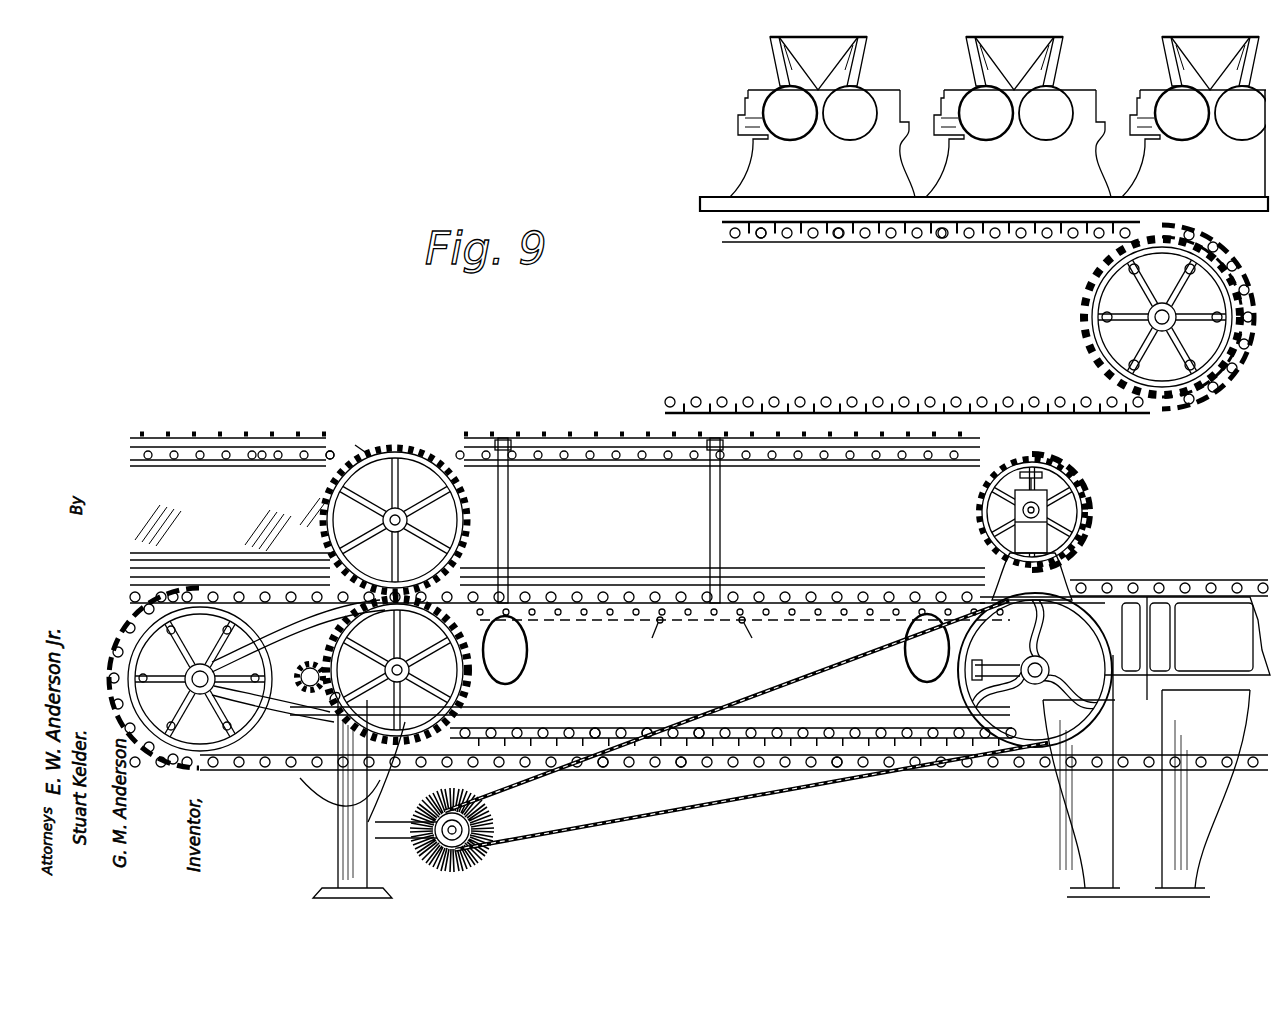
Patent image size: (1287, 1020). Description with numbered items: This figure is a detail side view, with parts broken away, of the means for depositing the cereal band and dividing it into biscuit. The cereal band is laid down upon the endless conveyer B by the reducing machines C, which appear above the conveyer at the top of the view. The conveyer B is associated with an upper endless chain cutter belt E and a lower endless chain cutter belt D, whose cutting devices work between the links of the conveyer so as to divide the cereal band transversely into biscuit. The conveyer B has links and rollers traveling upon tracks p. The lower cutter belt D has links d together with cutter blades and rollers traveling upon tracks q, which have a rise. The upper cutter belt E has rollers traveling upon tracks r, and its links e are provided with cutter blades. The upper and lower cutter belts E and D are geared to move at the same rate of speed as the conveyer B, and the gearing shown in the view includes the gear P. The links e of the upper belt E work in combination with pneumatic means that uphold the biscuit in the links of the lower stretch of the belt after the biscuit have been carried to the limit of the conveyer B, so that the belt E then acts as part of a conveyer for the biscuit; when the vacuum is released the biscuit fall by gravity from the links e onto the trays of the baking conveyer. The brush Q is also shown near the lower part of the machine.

The reducing machines C is at (1001, 117).
The endless conveyer B is at (688, 518).
The upper endless chain cutter belt E is at (547, 436).
The links e is at (366, 442).
The tracks r is at (585, 412).
The pinion gear P is at (297, 677).
The lower endless chain cutter belt D is at (866, 730).
The links d is at (590, 728).
The tracks q is at (505, 650).
The tracks p is at (650, 637).
The rotary brush Q is at (434, 836).